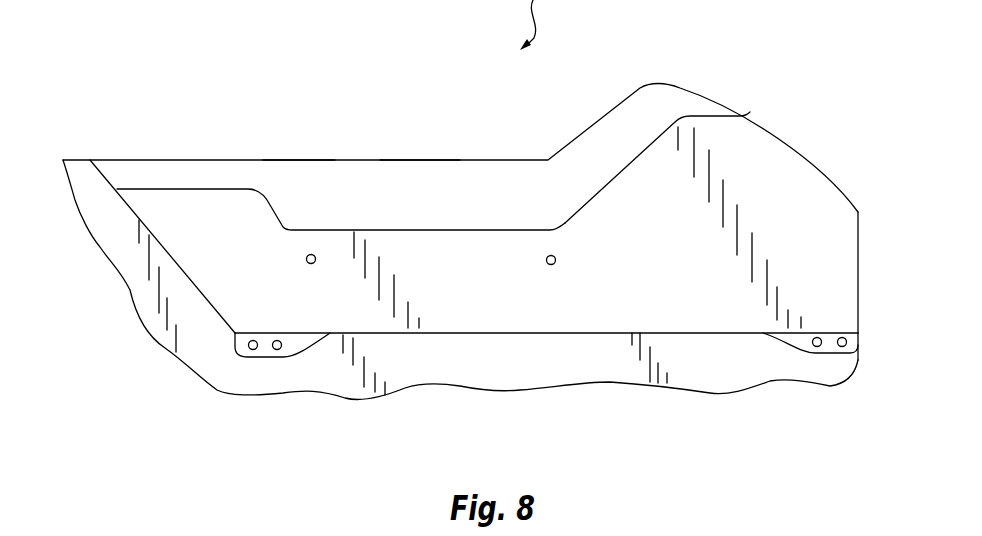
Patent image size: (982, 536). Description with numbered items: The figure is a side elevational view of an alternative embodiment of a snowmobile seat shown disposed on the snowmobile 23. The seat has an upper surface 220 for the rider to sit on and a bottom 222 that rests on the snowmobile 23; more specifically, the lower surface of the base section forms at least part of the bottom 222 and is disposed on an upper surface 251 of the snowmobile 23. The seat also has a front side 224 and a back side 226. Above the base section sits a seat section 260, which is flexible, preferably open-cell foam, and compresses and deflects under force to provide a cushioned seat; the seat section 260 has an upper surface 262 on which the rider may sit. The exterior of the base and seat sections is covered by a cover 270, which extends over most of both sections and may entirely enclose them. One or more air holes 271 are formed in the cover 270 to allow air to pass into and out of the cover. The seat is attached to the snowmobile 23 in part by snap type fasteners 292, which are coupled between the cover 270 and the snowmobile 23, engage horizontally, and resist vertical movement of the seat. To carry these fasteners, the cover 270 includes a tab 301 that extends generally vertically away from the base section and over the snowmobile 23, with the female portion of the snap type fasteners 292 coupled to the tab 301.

The upper surface 220 is at (216, 158).
The upper surface of the seat section 262 is at (298, 157).
The seat section 260 is at (405, 158).
The cover 270 is at (780, 169).
The back side 226 is at (860, 288).
The front side 224 is at (125, 200).
The snap type fasteners 292 is at (230, 355).
The tab 301 is at (265, 370).
The bottom 222 is at (437, 333).
The air holes 271 is at (551, 265).
The upper surface of the snowmobile 251 is at (680, 333).
The snowmobile 23 is at (760, 370).